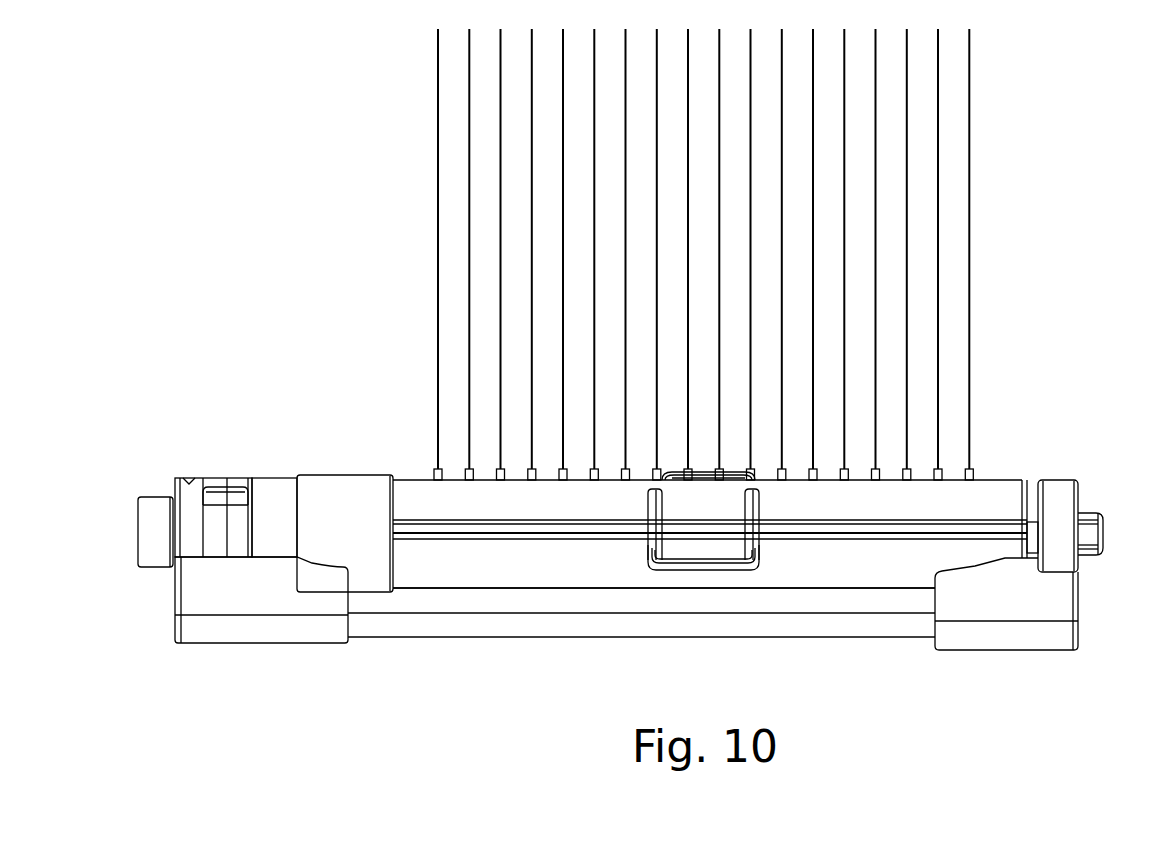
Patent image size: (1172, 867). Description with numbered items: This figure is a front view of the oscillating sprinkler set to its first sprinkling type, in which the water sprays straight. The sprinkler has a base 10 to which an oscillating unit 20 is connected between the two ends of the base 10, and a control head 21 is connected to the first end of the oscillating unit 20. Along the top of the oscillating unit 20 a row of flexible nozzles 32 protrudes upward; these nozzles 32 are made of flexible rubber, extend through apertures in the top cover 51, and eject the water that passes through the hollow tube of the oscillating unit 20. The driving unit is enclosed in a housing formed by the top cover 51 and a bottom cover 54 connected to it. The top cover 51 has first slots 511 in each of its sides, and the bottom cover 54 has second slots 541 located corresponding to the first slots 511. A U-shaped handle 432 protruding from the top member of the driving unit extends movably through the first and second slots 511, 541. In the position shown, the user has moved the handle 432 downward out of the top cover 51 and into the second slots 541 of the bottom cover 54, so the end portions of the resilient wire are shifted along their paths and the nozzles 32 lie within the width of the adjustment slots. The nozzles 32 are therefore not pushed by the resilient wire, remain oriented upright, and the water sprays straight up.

The base 10 is at (1100, 628).
The oscillating unit 20 is at (284, 522).
The control head 21 is at (277, 545).
The flexible nozzles 32 is at (432, 473).
The top cover 51 is at (719, 533).
The first slots 511 is at (650, 508).
The bottom cover 54 is at (510, 567).
The second slots 541 is at (762, 538).
The handles 432 is at (710, 566).